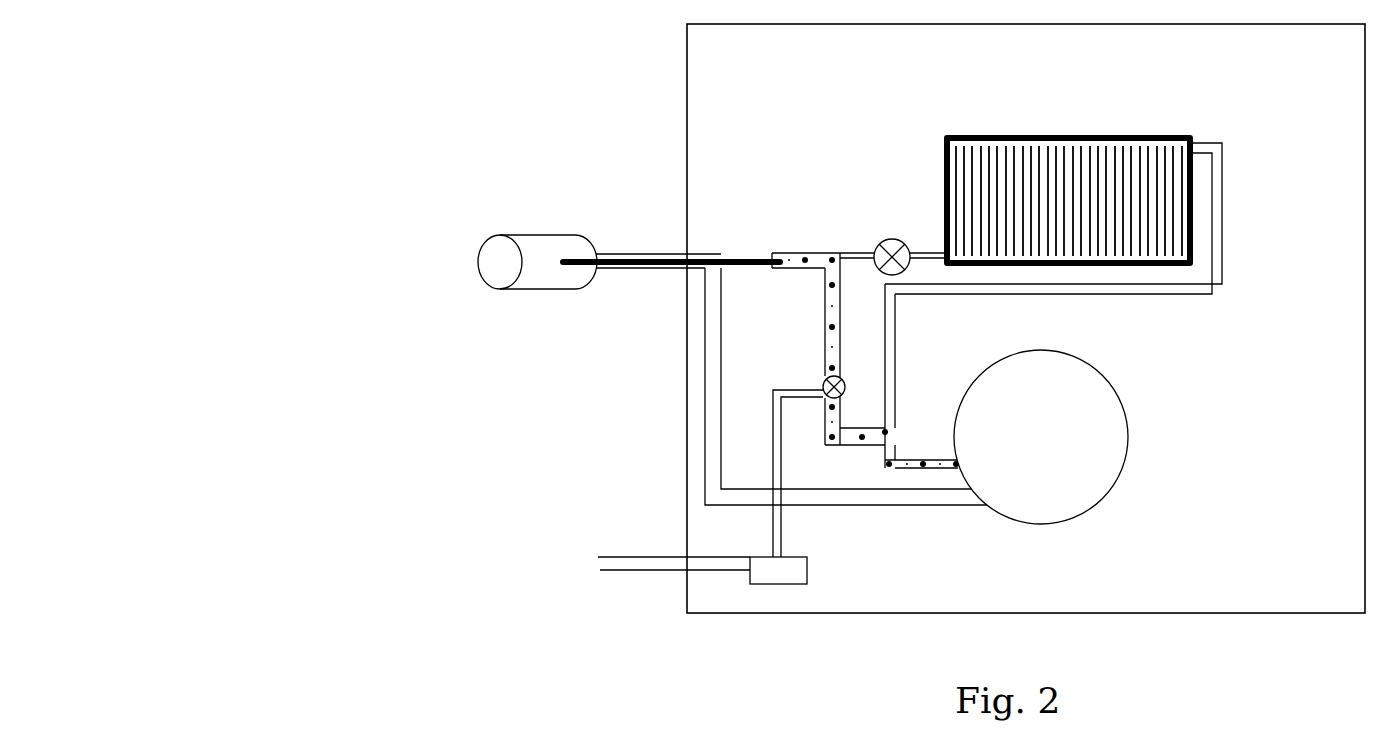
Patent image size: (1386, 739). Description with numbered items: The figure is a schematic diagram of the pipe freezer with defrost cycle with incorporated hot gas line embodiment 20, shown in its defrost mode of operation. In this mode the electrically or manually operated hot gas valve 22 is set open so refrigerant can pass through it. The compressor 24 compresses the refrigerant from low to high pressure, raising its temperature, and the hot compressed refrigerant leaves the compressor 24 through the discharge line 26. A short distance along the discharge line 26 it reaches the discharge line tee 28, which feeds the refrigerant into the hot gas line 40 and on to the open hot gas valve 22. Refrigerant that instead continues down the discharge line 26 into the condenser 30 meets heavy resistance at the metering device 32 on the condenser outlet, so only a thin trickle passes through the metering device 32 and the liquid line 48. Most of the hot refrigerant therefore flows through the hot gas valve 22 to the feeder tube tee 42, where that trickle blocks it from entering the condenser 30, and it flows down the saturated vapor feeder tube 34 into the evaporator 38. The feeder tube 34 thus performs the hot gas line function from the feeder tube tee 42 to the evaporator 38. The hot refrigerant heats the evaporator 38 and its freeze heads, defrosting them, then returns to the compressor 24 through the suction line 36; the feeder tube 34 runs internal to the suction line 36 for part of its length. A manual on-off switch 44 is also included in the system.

The pipe freezer with defrost cycle with incorporated hot gas line embodiment 20 is at (150, 260).
The hot gas valve 22 is at (823, 383).
The compressor 24 is at (1128, 438).
The discharge line 26 is at (1112, 295).
The discharge line tee 28 is at (893, 428).
The condenser 30 is at (1098, 138).
The metering device 32 is at (891, 239).
The saturated vapor feeder tube 34 is at (733, 257).
The suction line 36 is at (622, 252).
The evaporator 38 is at (516, 235).
The hot gas line 40 is at (832, 446).
The feeder tube tee 42 is at (840, 257).
The manual on-off switch 44 is at (807, 567).
The liquid line 48 is at (934, 254).